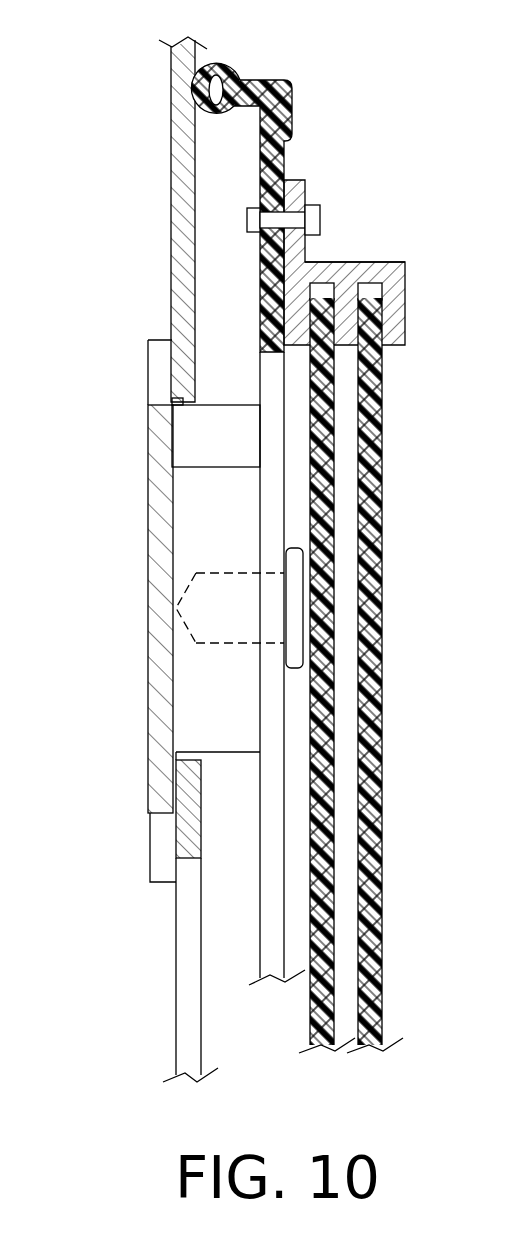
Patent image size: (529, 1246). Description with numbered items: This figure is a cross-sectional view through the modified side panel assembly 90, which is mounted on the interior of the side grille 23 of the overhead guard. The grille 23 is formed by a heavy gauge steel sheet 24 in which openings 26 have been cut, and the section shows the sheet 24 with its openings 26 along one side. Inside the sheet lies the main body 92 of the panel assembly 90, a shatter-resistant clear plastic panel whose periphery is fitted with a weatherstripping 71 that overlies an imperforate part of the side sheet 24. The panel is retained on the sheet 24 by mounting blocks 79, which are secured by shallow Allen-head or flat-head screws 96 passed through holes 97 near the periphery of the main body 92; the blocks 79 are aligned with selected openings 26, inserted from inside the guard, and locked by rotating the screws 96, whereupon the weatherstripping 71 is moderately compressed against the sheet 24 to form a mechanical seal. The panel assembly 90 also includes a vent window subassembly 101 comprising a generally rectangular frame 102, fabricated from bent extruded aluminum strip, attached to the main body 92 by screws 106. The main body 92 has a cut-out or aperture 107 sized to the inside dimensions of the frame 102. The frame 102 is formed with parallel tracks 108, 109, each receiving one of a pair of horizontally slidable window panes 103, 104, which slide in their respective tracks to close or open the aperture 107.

The grille 23 is at (175, 1000).
The steel sheet 24 is at (184, 243).
The openings 26 is at (183, 404).
The weatherstripping 71 is at (242, 66).
The mounting blocks 79 is at (147, 535).
The side panel assembly 90 is at (392, 262).
The main body 92 is at (285, 181).
The screws 96 is at (290, 652).
The holes 97 is at (284, 643).
The vent window subassembly 101 is at (400, 675).
The frame 102 is at (407, 316).
The window pane 103 is at (330, 578).
The window pane 104 is at (385, 497).
The screws 106 is at (320, 208).
The aperture 107 is at (280, 353).
The track 108 is at (368, 290).
The track 109 is at (333, 287).